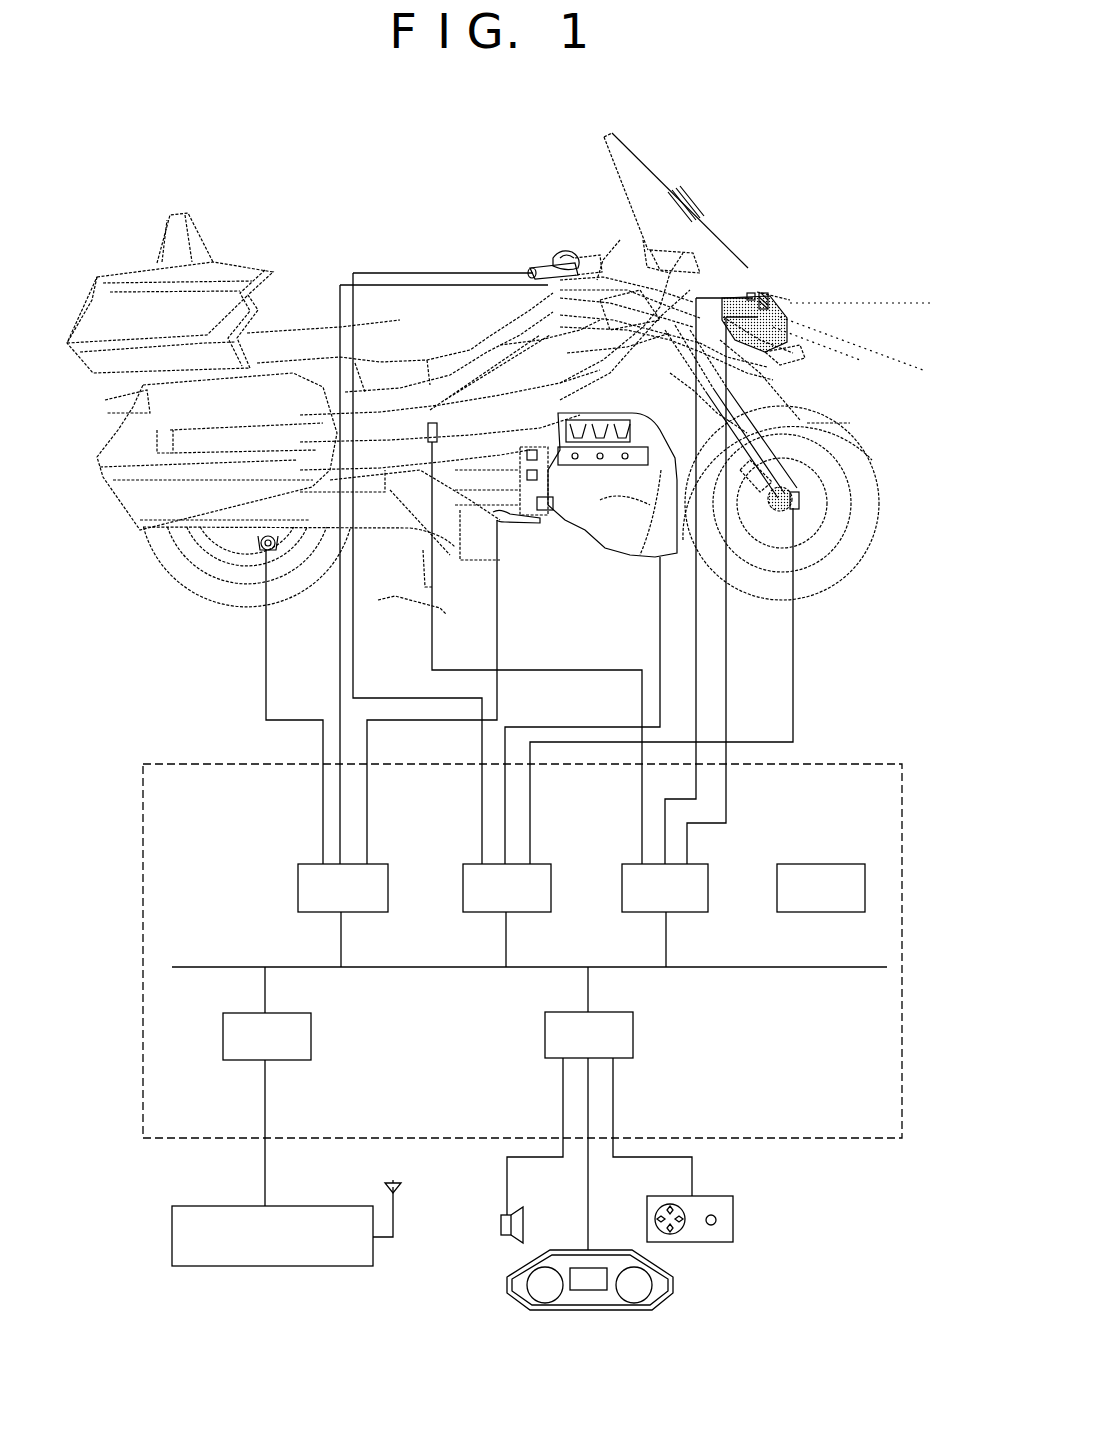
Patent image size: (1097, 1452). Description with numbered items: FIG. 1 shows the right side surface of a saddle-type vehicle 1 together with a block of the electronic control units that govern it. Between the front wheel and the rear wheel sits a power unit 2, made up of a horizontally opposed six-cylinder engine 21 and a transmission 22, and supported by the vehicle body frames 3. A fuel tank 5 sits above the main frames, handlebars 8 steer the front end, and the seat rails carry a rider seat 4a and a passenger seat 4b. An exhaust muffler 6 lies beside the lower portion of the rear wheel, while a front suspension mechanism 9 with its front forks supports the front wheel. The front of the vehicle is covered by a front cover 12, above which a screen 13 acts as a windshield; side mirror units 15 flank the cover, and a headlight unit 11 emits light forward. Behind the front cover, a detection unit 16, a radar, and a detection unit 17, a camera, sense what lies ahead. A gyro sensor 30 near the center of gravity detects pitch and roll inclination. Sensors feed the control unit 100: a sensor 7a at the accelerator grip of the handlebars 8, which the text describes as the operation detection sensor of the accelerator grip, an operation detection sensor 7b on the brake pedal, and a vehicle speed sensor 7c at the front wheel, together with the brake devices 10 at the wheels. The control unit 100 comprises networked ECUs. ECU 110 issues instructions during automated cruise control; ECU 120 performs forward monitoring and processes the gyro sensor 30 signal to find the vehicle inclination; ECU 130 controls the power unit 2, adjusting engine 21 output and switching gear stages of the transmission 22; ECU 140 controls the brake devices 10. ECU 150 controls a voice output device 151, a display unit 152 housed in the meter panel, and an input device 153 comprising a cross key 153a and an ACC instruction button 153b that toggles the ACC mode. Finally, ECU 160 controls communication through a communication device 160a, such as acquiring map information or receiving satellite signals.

The saddle-type vehicle 1 is at (390, 170).
The power unit 2 is at (564, 527).
The vehicle body frames 3 is at (465, 412).
The seat 4a is at (410, 366).
The seat 4b is at (250, 342).
The fuel tank 5 is at (500, 318).
The exhaust muffler 6 is at (141, 528).
The throttle grip sensor 7a is at (562, 256).
The operation detection sensor 7b is at (497, 521).
The vehicle speed sensor 7c is at (800, 500).
The handlebars 8 is at (536, 268).
The front suspension mechanism 9 is at (775, 376).
The brake device 10 is at (260, 549).
The headlight unit 11 is at (760, 290).
The front cover 12 is at (797, 296).
The screen 13 is at (692, 207).
The side mirror unit 15 is at (666, 245).
The detection unit 16 is at (797, 345).
The detection unit 17 is at (772, 295).
The engine 21 is at (600, 480).
The transmission 22 is at (513, 498).
The gyro sensor 30 is at (430, 422).
The control unit 100 is at (868, 762).
The ECU 110 is at (847, 913).
The ECU 120 is at (695, 913).
The ECU 130 is at (540, 913).
The ECU 140 is at (375, 913).
The ECU 150 is at (633, 1038).
The voice output device 151 is at (500, 1218).
The display unit 152 is at (590, 1291).
The input device 153 is at (734, 1251).
The cross key switch 153a is at (680, 1232).
The ACC instruction button 153b is at (716, 1220).
The ECU 160 is at (290, 1062).
The communication device 160a is at (297, 1267).